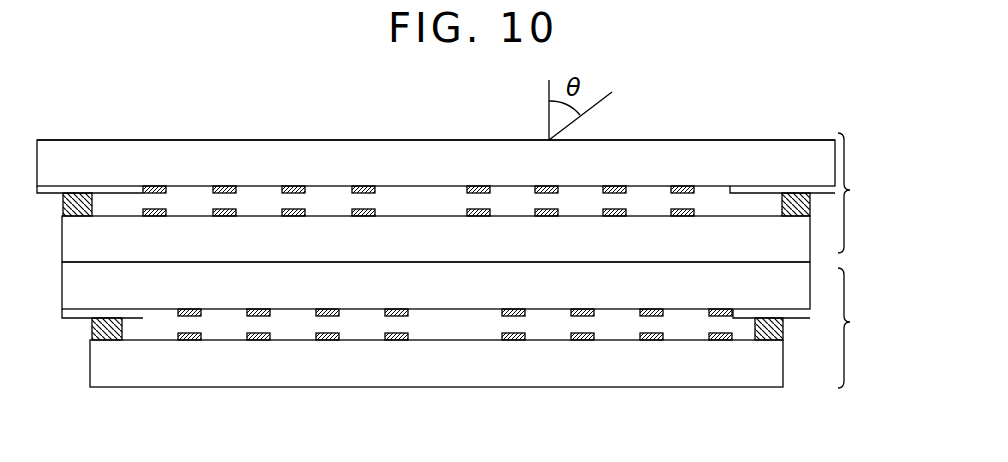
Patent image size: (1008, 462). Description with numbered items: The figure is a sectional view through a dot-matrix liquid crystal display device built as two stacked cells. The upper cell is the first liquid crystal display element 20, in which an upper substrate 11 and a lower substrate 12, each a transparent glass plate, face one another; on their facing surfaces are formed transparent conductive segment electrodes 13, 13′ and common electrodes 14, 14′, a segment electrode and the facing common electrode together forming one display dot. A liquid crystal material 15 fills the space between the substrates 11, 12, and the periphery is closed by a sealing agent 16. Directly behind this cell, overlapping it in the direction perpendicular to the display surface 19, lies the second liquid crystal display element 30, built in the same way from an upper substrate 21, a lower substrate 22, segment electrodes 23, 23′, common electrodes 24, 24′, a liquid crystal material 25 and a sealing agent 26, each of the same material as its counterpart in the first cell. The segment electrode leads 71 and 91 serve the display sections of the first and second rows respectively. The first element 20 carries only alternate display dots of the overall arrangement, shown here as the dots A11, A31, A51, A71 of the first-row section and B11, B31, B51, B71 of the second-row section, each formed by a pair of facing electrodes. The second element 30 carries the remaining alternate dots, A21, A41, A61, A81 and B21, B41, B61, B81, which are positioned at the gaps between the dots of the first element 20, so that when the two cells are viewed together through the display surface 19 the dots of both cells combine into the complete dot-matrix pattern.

The upper substrate 11 is at (357, 140).
The lower substrate 12 is at (403, 232).
The segment electrode 13 is at (147, 186).
The segment electrode 13′ is at (680, 186).
The common electrode 14 is at (153, 216).
The common electrode 14′ is at (696, 212).
The liquid crystal material 15 is at (440, 195).
The sealing agent 16 is at (77, 216).
The display surface 19 is at (764, 140).
The first liquid crystal display element 20 is at (861, 193).
The upper substrate 21 is at (62, 287).
The lower substrate 22 is at (153, 382).
The segment electrode 23 is at (178, 318).
The segment electrode 23′ is at (503, 318).
The common electrode 24 is at (205, 335).
The common electrode 24′ is at (513, 338).
The liquid crystal material 25 is at (437, 330).
The sealing agent 26 is at (113, 340).
The second liquid crystal display element 30 is at (860, 328).
The segment electrode lead 71 is at (48, 193).
The segment electrode lead 91 is at (821, 196).
The display dot A11 is at (156, 205).
The display dot A31 is at (237, 214).
The display dot A51 is at (305, 214).
The display dot A71 is at (374, 214).
The display dot B11 is at (489, 214).
The display dot B31 is at (557, 214).
The display dot B51 is at (625, 214).
The display dot B71 is at (700, 162).
The display dot A21 is at (206, 349).
The display dot A41 is at (269, 338).
The display dot A61 is at (338, 338).
The display dot A81 is at (407, 338).
The display dot B21 is at (520, 328).
The display dot B41 is at (593, 338).
The display dot B61 is at (662, 338).
The display dot B81 is at (710, 338).